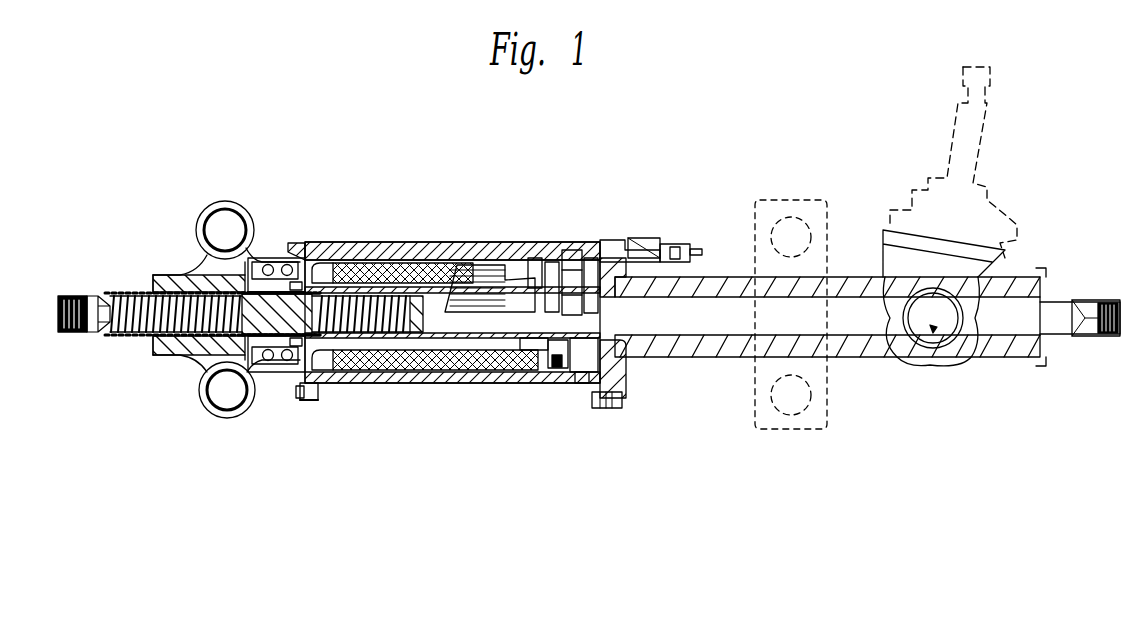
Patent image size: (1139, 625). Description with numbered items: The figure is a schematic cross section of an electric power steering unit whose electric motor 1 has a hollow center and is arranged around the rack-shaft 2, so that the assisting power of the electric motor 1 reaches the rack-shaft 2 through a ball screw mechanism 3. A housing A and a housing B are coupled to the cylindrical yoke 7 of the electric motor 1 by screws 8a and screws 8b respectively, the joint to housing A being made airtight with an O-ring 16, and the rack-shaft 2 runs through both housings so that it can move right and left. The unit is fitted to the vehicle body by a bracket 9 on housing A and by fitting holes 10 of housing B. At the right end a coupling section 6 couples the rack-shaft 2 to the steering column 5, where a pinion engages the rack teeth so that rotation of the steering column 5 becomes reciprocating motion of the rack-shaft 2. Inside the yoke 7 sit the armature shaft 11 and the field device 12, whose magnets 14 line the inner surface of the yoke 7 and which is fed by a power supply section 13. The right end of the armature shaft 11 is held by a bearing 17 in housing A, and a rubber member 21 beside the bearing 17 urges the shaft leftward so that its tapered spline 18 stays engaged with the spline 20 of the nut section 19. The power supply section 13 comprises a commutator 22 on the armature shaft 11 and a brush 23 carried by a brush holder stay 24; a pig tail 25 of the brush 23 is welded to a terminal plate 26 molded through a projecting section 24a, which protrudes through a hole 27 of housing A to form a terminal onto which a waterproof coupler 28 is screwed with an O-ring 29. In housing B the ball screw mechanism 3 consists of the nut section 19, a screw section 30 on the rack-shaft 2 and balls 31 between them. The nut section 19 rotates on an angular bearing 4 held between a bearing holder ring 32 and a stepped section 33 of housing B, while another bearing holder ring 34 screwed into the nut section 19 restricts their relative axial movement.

The electric motor 1 is at (383, 242).
The rack-shaft 2 is at (722, 356).
The ball screw mechanism 3 is at (268, 362).
The angular bearing 4 is at (268, 258).
The steering column 5 is at (962, 134).
The coupling section 6 is at (945, 358).
The yoke 7 is at (488, 383).
The screws 8a is at (600, 406).
The screws 8b is at (316, 402).
The bracket 9 is at (791, 200).
The fitting holes 10 is at (222, 232).
The armature shaft 11 is at (462, 376).
The field device 12 is at (435, 250).
The power supply section 13 is at (556, 372).
The magnets 14 is at (432, 383).
The O-ring 16 is at (581, 383).
The bearing 17 is at (630, 392).
The tapered spline 18 is at (342, 256).
The nut section 19 is at (264, 370).
The spline 20 is at (312, 248).
The rubber member 21 is at (628, 370).
The commutator 22 is at (548, 262).
The brush 23 is at (530, 383).
The brush holder stay 24 is at (580, 258).
The projecting section 24a is at (598, 247).
The pig tail 25 is at (292, 262).
The terminal plate 26 is at (549, 260).
The hole 27 is at (632, 247).
The coupler 28 is at (678, 247).
The O-ring 29 is at (640, 243).
The screw section 30 is at (170, 356).
The balls 31 is at (283, 372).
The bearing holder ring 32 is at (320, 381).
The stepped section 33 is at (237, 366).
The bearing holder ring 34 is at (252, 263).
The housing A is at (867, 356).
The housing B is at (172, 250).